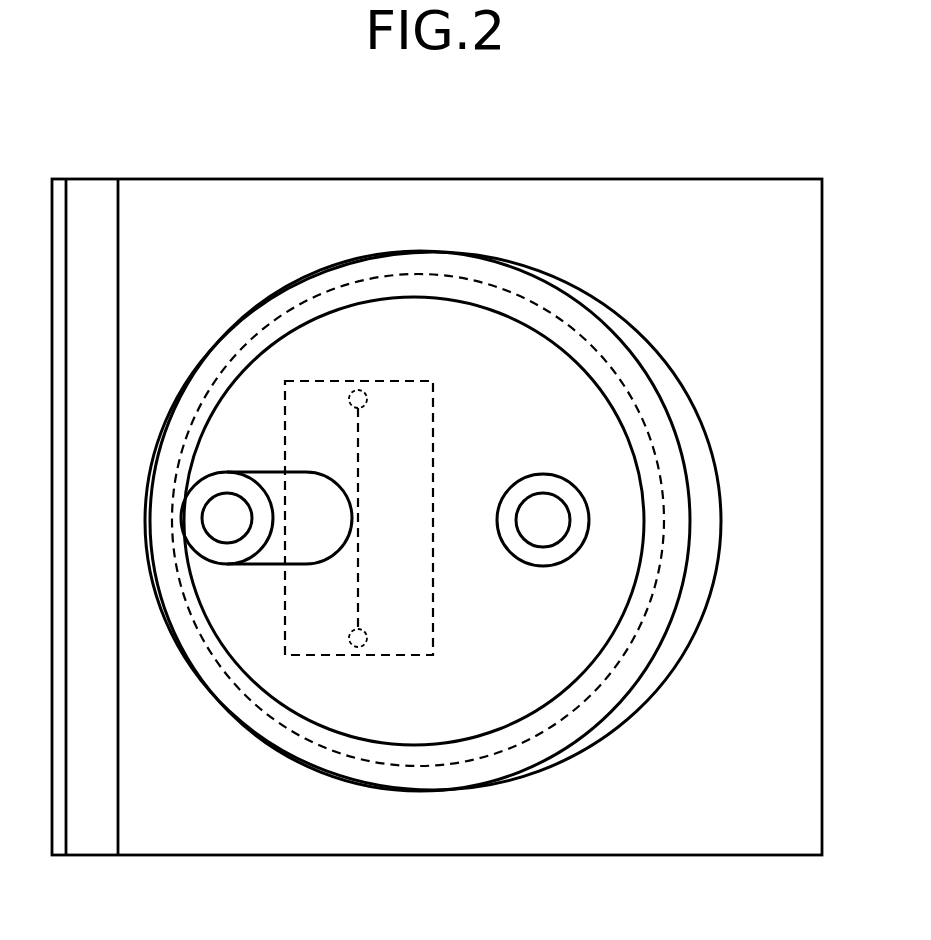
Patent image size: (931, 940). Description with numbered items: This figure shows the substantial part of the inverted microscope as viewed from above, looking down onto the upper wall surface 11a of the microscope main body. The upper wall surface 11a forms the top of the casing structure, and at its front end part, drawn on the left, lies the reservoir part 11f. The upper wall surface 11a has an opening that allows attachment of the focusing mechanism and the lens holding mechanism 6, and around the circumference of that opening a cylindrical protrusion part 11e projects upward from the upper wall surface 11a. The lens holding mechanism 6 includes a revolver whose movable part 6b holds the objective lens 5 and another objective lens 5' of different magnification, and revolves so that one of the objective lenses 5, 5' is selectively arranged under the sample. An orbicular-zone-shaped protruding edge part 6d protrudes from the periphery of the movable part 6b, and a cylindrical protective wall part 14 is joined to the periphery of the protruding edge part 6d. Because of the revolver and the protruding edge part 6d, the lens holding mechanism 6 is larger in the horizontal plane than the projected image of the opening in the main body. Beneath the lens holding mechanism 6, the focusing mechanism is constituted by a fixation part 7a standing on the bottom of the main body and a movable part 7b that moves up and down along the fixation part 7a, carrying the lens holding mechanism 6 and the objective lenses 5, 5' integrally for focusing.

The upper wall surface 11a is at (428, 179).
The reservoir part 11f is at (92, 179).
The protrusion part 11e is at (636, 396).
The protective wall part 14 is at (633, 320).
The lens holding mechanism 6 is at (456, 490).
The movable part 6b is at (528, 318).
The protruding edge part 6d is at (232, 327).
The objective lens 5 is at (598, 615).
The objective lens 5' is at (253, 610).
The fixation part 7a is at (320, 655).
The movable part 7b is at (395, 655).